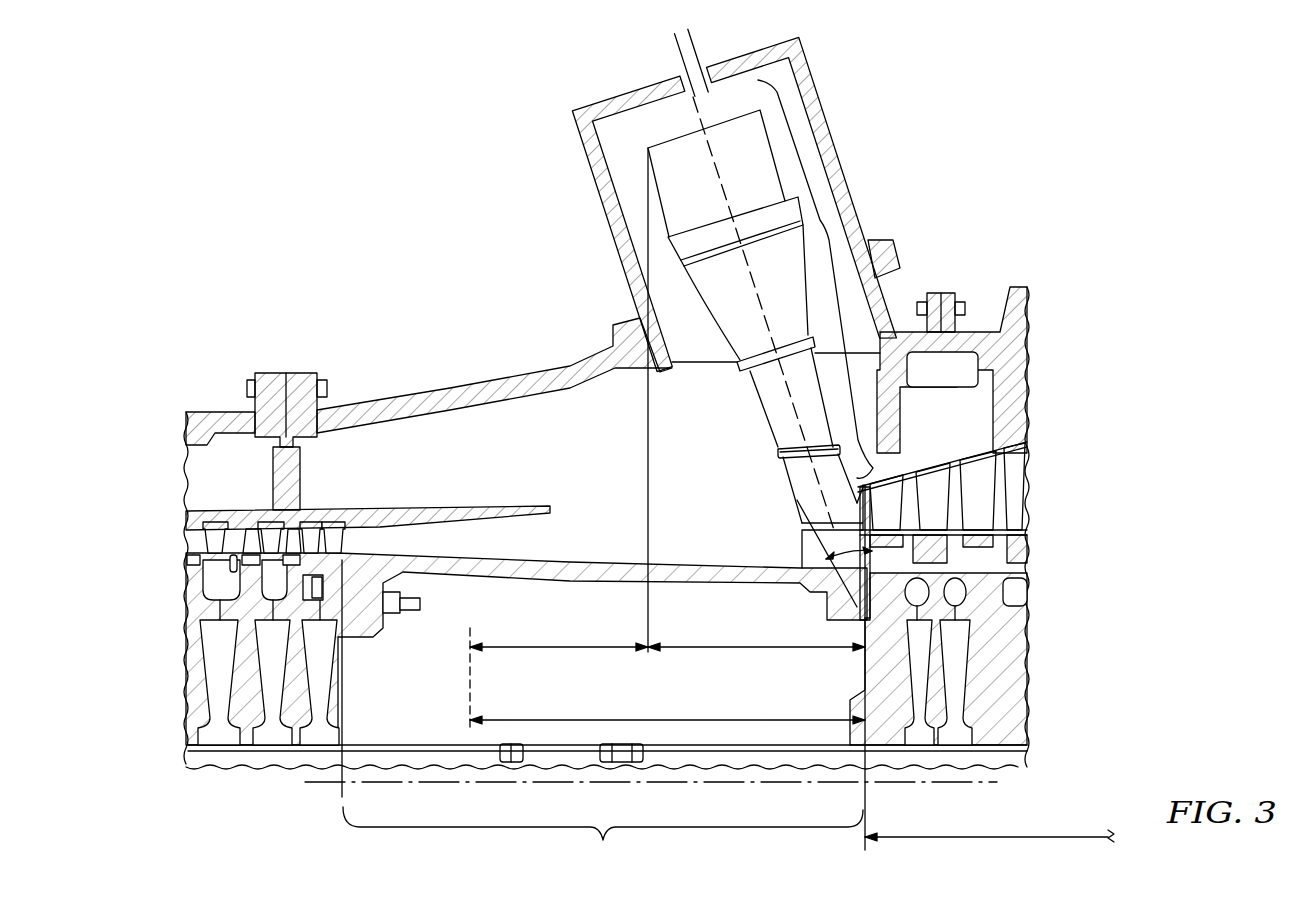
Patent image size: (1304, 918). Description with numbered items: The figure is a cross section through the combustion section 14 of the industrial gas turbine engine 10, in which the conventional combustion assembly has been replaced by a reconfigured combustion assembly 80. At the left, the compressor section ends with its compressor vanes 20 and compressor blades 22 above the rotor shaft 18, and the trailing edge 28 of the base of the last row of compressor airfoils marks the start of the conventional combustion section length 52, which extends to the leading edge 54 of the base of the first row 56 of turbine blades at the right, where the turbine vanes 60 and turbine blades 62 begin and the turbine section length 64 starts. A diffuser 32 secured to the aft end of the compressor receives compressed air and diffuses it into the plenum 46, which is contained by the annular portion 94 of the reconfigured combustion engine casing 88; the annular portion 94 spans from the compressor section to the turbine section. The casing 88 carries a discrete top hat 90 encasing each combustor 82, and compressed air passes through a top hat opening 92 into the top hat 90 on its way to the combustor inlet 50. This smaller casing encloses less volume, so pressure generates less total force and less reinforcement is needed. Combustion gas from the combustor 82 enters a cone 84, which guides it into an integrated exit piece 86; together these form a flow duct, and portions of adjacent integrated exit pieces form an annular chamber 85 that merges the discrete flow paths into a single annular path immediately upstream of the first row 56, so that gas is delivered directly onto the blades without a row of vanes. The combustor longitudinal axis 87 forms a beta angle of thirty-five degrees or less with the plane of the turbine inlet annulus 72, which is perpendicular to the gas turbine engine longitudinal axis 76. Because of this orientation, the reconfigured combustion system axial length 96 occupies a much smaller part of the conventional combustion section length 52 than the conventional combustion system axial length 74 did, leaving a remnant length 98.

The industrial gas turbine engine 10 is at (1020, 185).
The combustion section 14 is at (500, 328).
The rotor shaft 18 is at (280, 767).
The compressor vanes 20 is at (333, 538).
The compressor blades 22 is at (292, 545).
The trailing edge of the last row of compressor airfoils 28 is at (343, 793).
The diffuser 32 is at (506, 549).
The plenum 46 is at (591, 479).
The combustor inlet 50 is at (670, 143).
The conventional combustion section length 52 is at (603, 840).
The leading edge of the first row of turbine blades 54 is at (863, 788).
The first row of turbine blades 56 is at (883, 497).
The turbine vanes 60 is at (930, 507).
The turbine blades 62 is at (983, 508).
The turbine section length 64 is at (1040, 837).
The turbine inlet annulus 72 is at (863, 512).
The conventional combustion system axial length 74 is at (672, 720).
The gas turbine engine longitudinal axis 76 is at (938, 782).
The reconfigured combustion assembly 80 is at (835, 223).
The combustor 82 is at (687, 190).
The cone 84 is at (717, 297).
The annular chamber 85 is at (857, 497).
The integrated exit piece 86 is at (783, 419).
The combustor longitudinal axis 87 is at (676, 52).
The reconfigured combustion engine casing 88 is at (813, 88).
The top hat 90 is at (607, 98).
The top hat opening 92 is at (717, 366).
The annular portion 94 is at (513, 376).
The reconfigured combustion system axial length 96 is at (752, 647).
The remnant length 98 is at (563, 647).